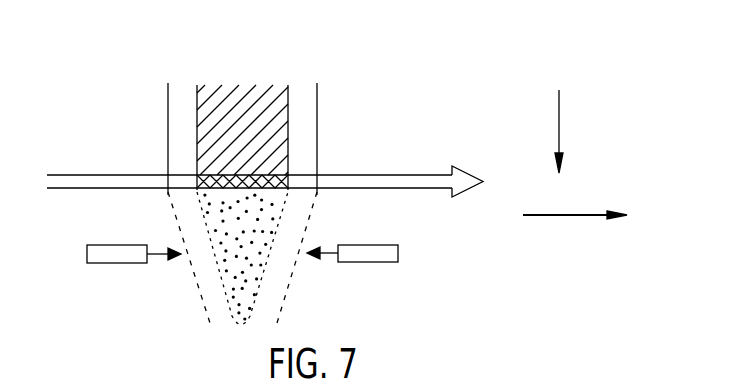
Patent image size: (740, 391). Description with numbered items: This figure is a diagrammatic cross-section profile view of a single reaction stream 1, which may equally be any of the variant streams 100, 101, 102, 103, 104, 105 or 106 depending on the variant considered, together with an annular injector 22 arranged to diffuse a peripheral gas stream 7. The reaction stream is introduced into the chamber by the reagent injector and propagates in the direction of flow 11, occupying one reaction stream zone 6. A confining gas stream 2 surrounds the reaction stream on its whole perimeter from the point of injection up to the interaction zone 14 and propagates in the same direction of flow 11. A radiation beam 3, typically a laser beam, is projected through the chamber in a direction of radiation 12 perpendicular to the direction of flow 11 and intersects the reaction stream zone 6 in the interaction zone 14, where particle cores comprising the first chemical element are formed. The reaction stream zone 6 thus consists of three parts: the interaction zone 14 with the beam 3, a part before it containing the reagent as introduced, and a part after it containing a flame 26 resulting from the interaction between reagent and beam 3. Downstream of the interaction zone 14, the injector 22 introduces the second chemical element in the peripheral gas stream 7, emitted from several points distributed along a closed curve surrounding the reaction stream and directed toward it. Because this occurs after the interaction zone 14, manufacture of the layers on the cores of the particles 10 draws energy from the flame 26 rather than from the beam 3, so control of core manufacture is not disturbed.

The reaction stream 1 is at (382, 106).
The reaction stream 100 is at (382, 106).
The reaction stream 101 is at (382, 106).
The reaction stream 102 is at (382, 106).
The reaction stream 103 is at (382, 106).
The reaction stream 104 is at (382, 106).
The reaction stream 105 is at (382, 106).
The reaction stream 106 is at (268, 100).
The reaction stream zone 6 is at (382, 173).
The confining gas stream 2 is at (177, 140).
The radiation beam 3 is at (422, 183).
The interaction zone 14 is at (287, 176).
The flame 26 is at (262, 250).
The peripheral gas stream 7 is at (325, 258).
The particles 10 is at (225, 273).
The direction of flow 11 is at (559, 123).
The direction of radiation 12 is at (559, 216).
The injector 22 is at (378, 255).